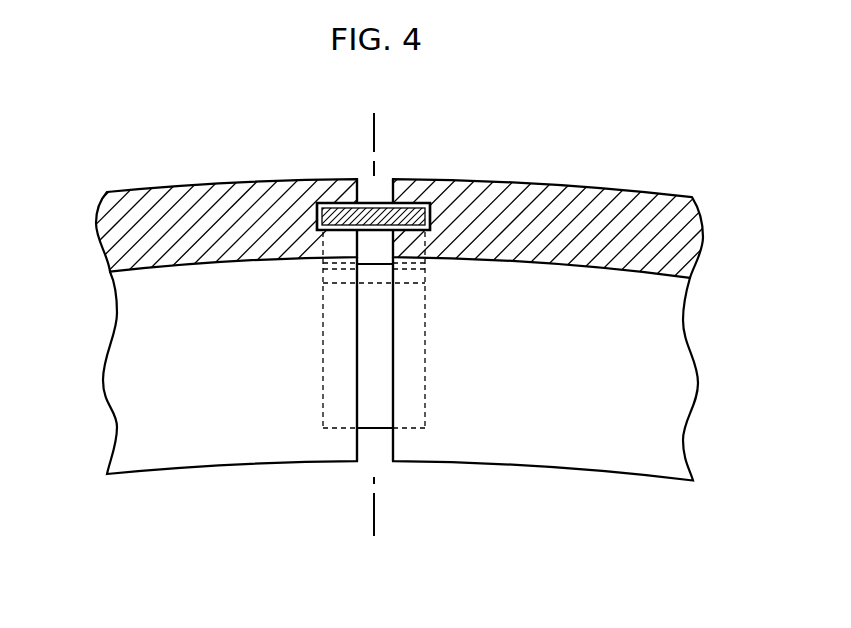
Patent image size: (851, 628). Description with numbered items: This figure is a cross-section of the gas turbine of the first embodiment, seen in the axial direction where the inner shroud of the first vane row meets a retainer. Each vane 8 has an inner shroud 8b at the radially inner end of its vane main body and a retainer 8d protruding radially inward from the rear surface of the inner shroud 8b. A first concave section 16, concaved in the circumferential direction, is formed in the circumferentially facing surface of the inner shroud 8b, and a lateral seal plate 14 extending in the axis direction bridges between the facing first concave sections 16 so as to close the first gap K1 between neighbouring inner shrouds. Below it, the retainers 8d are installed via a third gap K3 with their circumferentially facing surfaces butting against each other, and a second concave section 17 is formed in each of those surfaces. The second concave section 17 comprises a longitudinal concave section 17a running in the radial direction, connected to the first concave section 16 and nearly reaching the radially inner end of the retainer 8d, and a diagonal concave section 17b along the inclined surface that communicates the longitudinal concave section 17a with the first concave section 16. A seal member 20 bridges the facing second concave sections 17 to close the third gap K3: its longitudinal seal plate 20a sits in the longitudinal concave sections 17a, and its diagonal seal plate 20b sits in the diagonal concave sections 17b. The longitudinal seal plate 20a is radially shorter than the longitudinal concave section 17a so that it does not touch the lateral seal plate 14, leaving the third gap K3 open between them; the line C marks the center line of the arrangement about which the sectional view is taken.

The vane 8 is at (425, 270).
The inner shroud 8b is at (152, 192).
The retainer 8d is at (128, 424).
The lateral seal plate 14 is at (408, 208).
The first concave section 16 is at (333, 203).
The second concave section 17 is at (313, 377).
The longitudinal concave section 17a is at (327, 312).
The diagonal concave section 17b is at (332, 286).
The seal member 20 is at (432, 414).
The longitudinal seal plate 20a is at (378, 428).
The diagonal seal plate 20b is at (406, 283).
The first gap K1 is at (373, 192).
The third gap K3 is at (371, 378).
The center line C is at (364, 125).